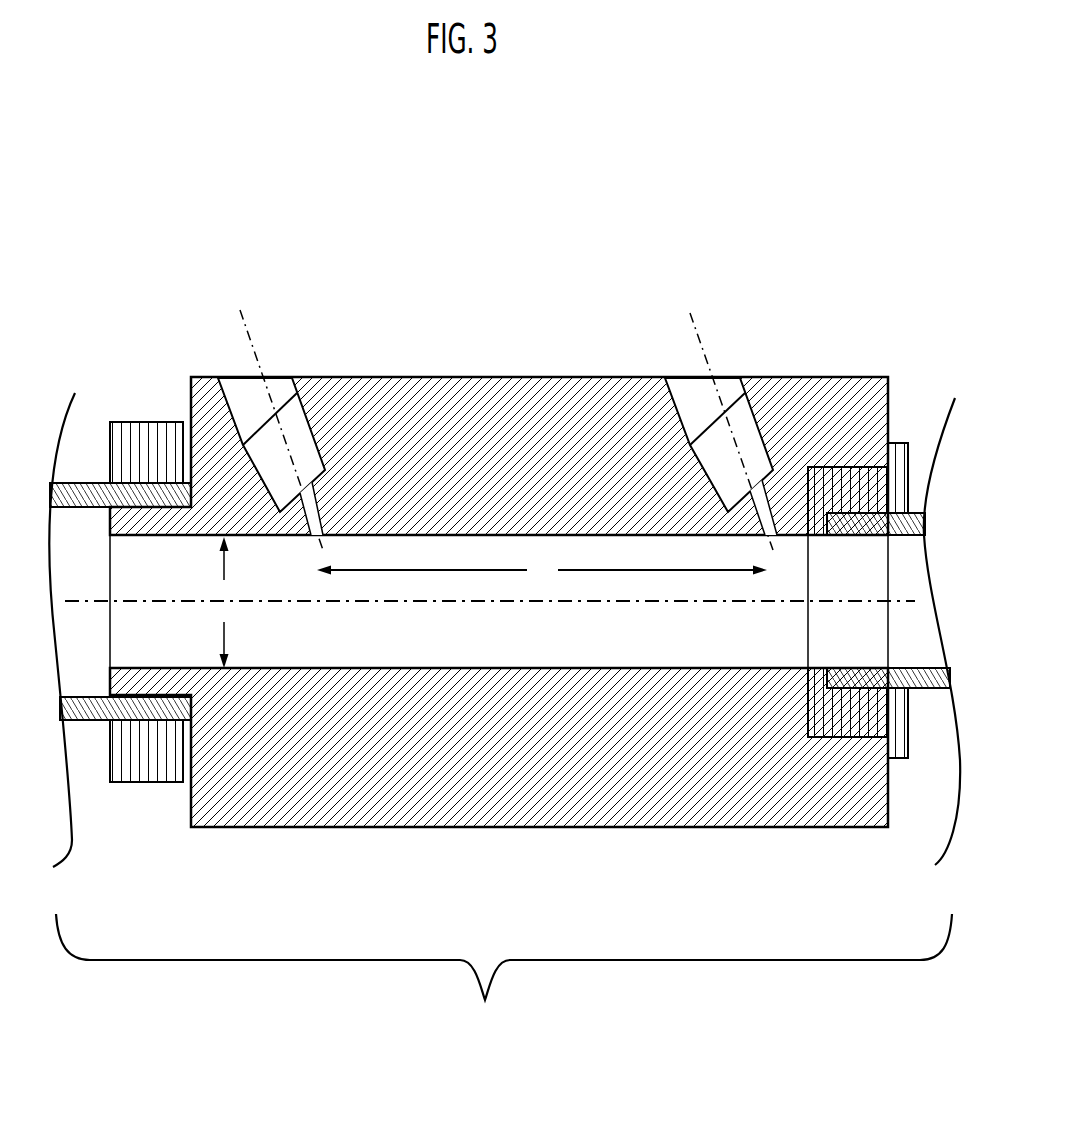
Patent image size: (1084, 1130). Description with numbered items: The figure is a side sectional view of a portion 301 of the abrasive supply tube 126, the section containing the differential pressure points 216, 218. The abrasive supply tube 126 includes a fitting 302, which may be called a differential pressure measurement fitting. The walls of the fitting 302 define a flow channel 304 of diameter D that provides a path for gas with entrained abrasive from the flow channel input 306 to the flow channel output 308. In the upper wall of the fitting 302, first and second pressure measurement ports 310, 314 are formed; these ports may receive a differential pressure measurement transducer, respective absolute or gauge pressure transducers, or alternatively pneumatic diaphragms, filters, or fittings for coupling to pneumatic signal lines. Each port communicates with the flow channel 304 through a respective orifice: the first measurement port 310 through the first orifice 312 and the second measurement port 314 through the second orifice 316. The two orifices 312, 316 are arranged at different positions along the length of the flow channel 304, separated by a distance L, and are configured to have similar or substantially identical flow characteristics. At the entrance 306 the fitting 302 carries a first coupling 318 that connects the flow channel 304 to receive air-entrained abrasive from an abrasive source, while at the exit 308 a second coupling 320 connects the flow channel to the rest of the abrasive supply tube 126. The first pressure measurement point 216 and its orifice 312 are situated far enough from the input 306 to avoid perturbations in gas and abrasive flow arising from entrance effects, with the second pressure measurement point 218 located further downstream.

The abrasive supply tube 126 is at (504, 569).
The portion of the abrasive supply tube 301 is at (378, 184).
The fitting 302 is at (702, 828).
The flow channel 304 is at (489, 652).
The flow channel input 306 is at (136, 567).
The flow channel output 308 is at (828, 580).
The first pressure measurement port 310 is at (307, 387).
The first orifice 312 is at (322, 536).
The second pressure measurement port 314 is at (751, 382).
The second orifice 316 is at (767, 534).
The first coupling 318 is at (145, 422).
The second coupling 320 is at (908, 750).
The first pressure measurement point 216 is at (318, 440).
The second pressure measurement point 218 is at (767, 440).